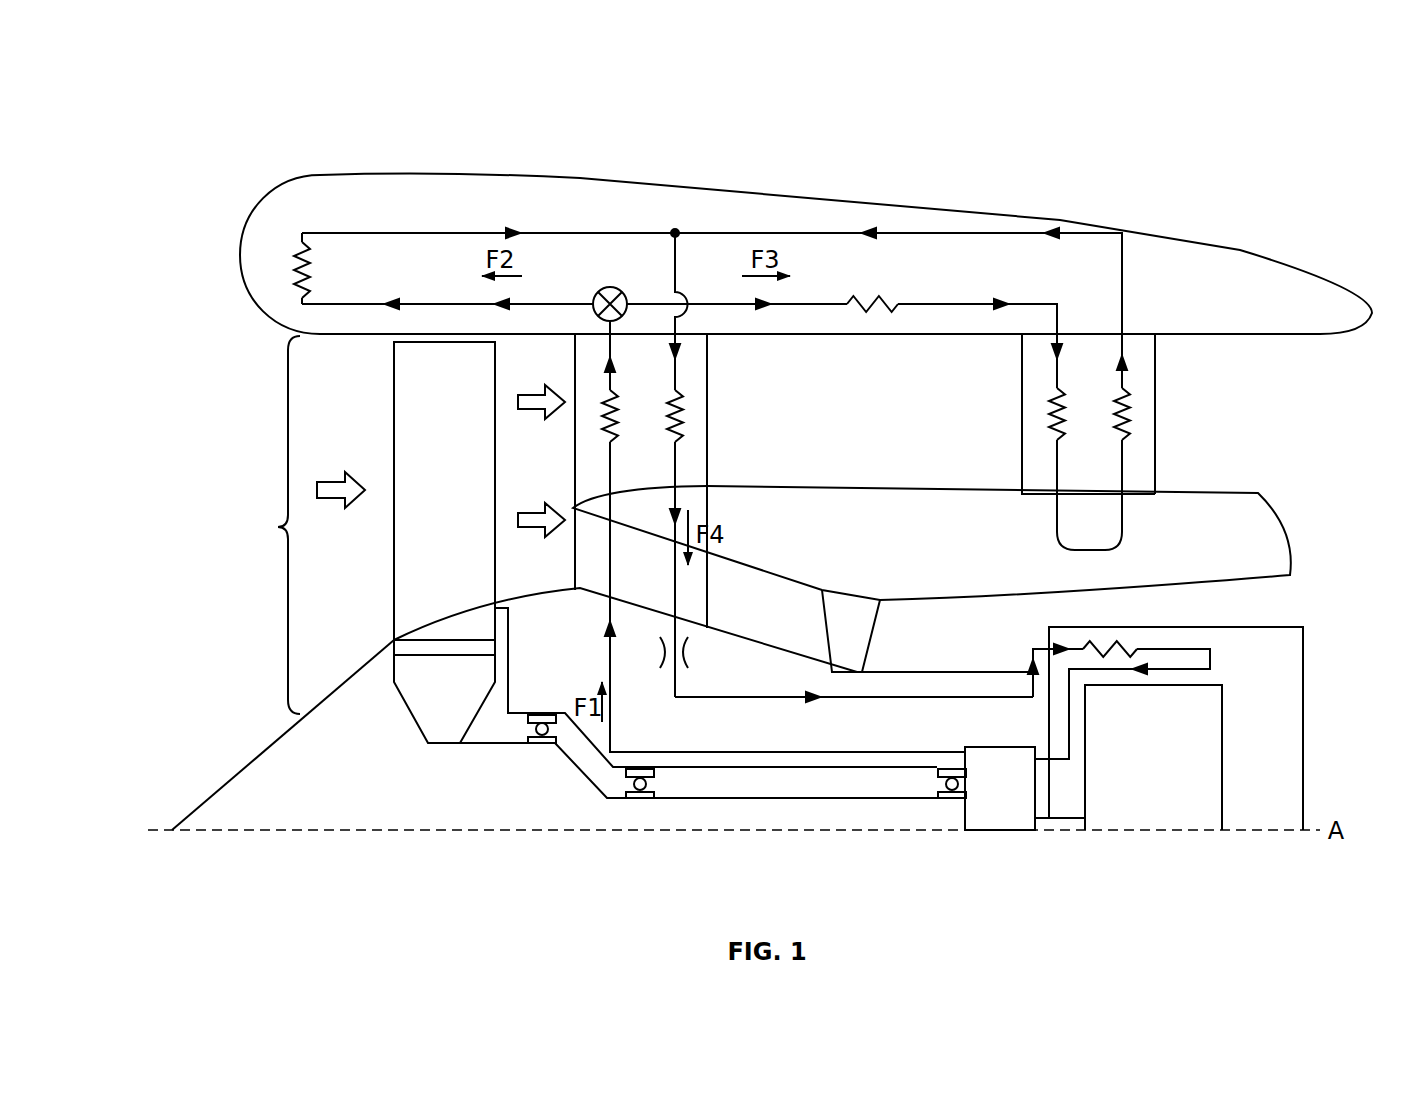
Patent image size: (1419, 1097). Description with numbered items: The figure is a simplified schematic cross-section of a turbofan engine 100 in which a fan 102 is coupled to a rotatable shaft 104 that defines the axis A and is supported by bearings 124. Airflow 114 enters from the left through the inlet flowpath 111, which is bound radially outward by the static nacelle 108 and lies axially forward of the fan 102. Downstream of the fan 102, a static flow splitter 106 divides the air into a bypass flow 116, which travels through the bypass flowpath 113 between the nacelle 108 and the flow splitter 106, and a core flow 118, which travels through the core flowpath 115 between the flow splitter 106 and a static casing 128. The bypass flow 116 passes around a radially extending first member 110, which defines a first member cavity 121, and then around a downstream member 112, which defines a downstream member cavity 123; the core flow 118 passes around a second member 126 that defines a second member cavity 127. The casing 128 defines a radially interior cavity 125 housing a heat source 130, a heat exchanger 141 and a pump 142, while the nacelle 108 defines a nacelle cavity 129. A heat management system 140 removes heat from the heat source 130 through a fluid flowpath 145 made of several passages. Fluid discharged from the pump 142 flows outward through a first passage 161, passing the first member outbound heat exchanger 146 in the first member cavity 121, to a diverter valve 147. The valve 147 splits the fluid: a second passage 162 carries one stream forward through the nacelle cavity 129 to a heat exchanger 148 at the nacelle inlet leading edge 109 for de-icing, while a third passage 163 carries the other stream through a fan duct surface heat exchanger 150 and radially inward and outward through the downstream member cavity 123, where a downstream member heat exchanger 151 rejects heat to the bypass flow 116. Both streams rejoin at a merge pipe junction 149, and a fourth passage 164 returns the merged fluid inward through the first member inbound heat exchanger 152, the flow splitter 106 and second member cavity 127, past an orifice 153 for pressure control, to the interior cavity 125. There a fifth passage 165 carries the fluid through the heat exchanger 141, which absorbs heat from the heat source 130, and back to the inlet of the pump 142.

The turbofan engine 100 is at (225, 80).
The fan 102 is at (444, 542).
The rotatable shaft 104 is at (742, 805).
The flow splitter 106 is at (932, 543).
The nacelle 108 is at (1254, 250).
The nacelle inlet leading edge 109 is at (240, 262).
The first member 110 is at (710, 347).
The inlet flowpath 111 is at (286, 524).
The downstream member 112 is at (1158, 398).
The bypass flowpath 113 is at (1022, 414).
The airflow 114 is at (330, 475).
The core flowpath 115 is at (891, 631).
The bypass flow 116 is at (520, 395).
The core flow 118 is at (520, 520).
The first member cavity 121 is at (687, 453).
The downstream member cavity 123 is at (1135, 470).
The bearing 124 is at (544, 752).
The radially interior cavity 125 is at (537, 677).
The second member 126 is at (709, 578).
The second member cavity 127 is at (657, 563).
The static casing 128 is at (567, 597).
The nacelle cavity 129 is at (562, 215).
The heat source 130 is at (1169, 728).
The heat management system 140 is at (1020, 175).
The heat exchanger 141 is at (1112, 640).
The pump 142 is at (1000, 788).
The fluid flowpath 145 is at (600, 470).
The first member outbound heat exchanger 146 is at (600, 425).
The diverter valve 147 is at (610, 287).
The heat exchanger 148 is at (298, 243).
The merge pipe junction 149 is at (676, 226).
The fan duct surface heat exchanger 150 is at (876, 300).
The downstream member heat exchanger 151 is at (1130, 388).
The first member inbound heat exchanger 152 is at (687, 403).
The orifice 153 is at (694, 652).
The first passage 161 is at (608, 655).
The second passage 162 is at (437, 230).
The third passage 163 is at (1083, 232).
The fourth passage 164 is at (664, 592).
The fifth passage 165 is at (906, 700).